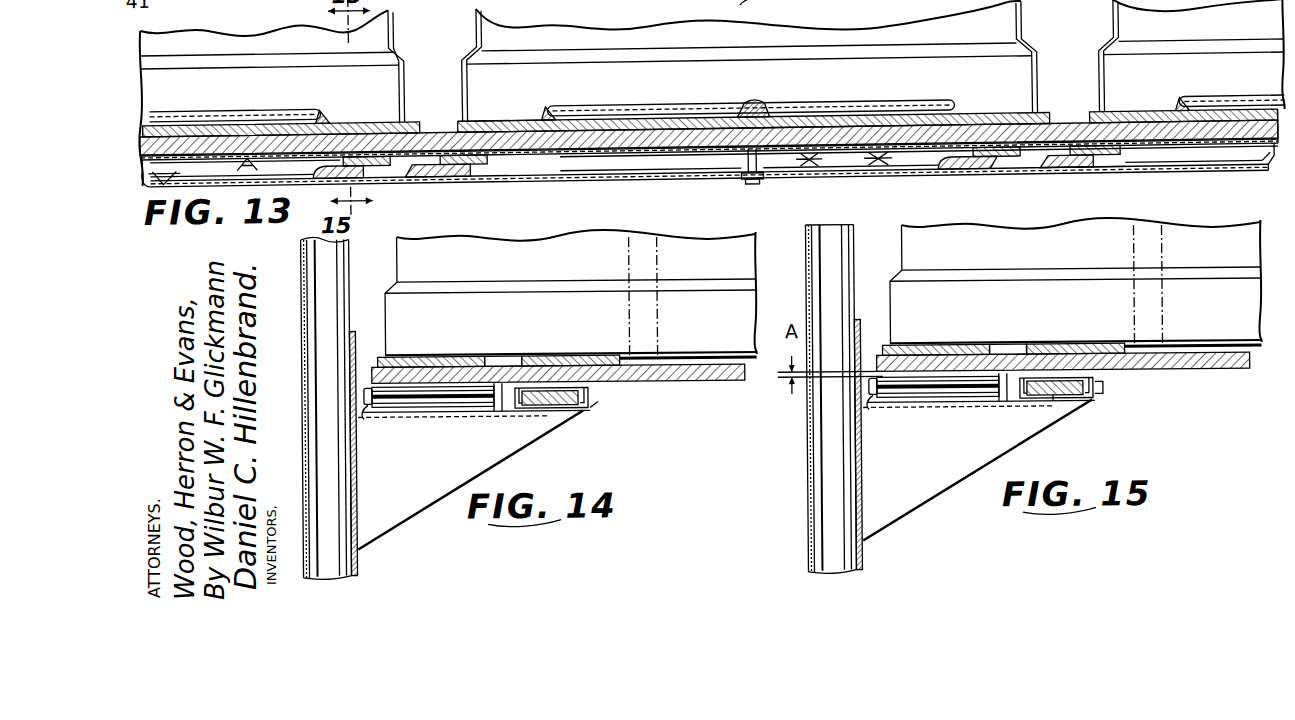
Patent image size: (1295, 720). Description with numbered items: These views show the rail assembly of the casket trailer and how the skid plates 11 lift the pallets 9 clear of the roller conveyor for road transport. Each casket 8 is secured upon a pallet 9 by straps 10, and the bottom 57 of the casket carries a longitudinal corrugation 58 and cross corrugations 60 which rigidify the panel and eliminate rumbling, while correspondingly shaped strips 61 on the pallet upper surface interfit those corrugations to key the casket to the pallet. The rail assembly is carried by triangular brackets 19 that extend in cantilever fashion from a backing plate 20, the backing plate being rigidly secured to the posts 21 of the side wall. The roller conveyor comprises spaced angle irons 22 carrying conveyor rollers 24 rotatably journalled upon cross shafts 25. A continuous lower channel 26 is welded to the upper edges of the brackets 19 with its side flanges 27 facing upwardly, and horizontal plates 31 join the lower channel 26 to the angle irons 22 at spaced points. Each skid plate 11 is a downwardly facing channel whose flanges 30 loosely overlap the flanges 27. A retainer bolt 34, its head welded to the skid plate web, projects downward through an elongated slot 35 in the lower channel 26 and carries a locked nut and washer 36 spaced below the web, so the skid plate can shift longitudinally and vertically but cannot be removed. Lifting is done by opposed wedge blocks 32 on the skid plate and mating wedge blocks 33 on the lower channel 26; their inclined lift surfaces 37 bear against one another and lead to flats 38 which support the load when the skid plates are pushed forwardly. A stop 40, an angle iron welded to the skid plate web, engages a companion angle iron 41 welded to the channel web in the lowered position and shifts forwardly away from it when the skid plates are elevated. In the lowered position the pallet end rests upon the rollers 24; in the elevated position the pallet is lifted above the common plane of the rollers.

In FIG. 13, the casket 8 is at (1032, 37).
In FIG. 14, the casket 8 is at (540, 247).
In FIG. 15, the casket 8 is at (1076, 276).
In FIG. 13, the pallet 9 is at (352, 147).
In FIG. 14, the pallet 9 is at (714, 385).
In FIG. 15, the pallet 9 is at (1066, 378).
In FIG. 14, the straps 10 is at (662, 307).
In FIG. 15, the straps 10 is at (1178, 285).
In FIG. 13, the skid plate 11 is at (968, 154).
In FIG. 14, the skid plate 11 is at (566, 391).
In FIG. 15, the skid plate 11 is at (1073, 346).
In FIG. 14, the bracket 19 is at (410, 498).
In FIG. 15, the bracket 19 is at (977, 469).
In FIG. 14, the backing plate 20 is at (355, 346).
In FIG. 15, the backing plate 20 is at (870, 423).
In FIG. 14, the post 21 is at (326, 284).
In FIG. 15, the post 21 is at (850, 398).
In FIG. 14, the angle iron 22 is at (398, 414).
In FIG. 15, the angle iron 22 is at (981, 407).
In FIG. 14, the conveyor roller 24 is at (430, 386).
In FIG. 15, the conveyor roller 24 is at (937, 352).
In FIG. 14, the cross shaft 25 is at (363, 413).
In FIG. 15, the cross shaft 25 is at (881, 413).
In FIG. 13, the lower channel 26 is at (622, 186).
In FIG. 14, the lower channel 26 is at (578, 413).
In FIG. 15, the lower channel 26 is at (1092, 420).
In FIG. 15, the side flange 27 is at (1119, 396).
In FIG. 13, the flange 30 is at (1279, 185).
In FIG. 14, the flange 30 is at (590, 396).
In FIG. 15, the flange 30 is at (1094, 383).
In FIG. 14, the horizontal plate 31 is at (450, 421).
In FIG. 15, the horizontal plate 31 is at (958, 434).
In FIG. 13, the wedge block 32 is at (448, 142).
In FIG. 14, the wedge block 32 is at (546, 370).
In FIG. 15, the wedge block 32 is at (1071, 330).
In FIG. 13, the wedge block 33 is at (441, 178).
In FIG. 15, the wedge block 33 is at (1060, 423).
In FIG. 13, the retainer bolt 34 is at (746, 180).
In FIG. 13, the elongated slot 35 is at (702, 187).
In FIG. 13, the nut and washer 36 is at (752, 194).
In FIG. 13, the inclined lift surface 37 is at (470, 175).
In FIG. 13, the flat 38 is at (1090, 184).
In FIG. 13, the stop 40 is at (876, 173).
In FIG. 13, the companion angle iron 41 is at (818, 178).
In FIG. 13, the bottom 57 is at (520, 125).
In FIG. 13, the longitudinal corrugation 58 is at (762, 116).
In FIG. 13, the cross corrugation 60 is at (605, 112).
In FIG. 13, the strip 61 is at (322, 118).